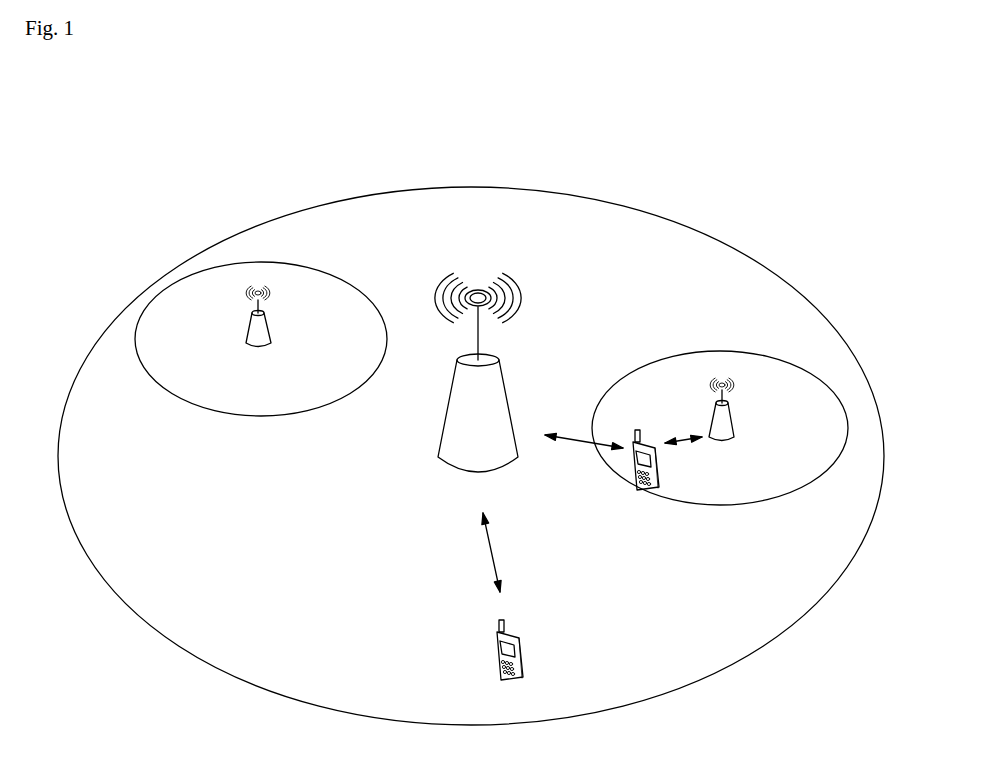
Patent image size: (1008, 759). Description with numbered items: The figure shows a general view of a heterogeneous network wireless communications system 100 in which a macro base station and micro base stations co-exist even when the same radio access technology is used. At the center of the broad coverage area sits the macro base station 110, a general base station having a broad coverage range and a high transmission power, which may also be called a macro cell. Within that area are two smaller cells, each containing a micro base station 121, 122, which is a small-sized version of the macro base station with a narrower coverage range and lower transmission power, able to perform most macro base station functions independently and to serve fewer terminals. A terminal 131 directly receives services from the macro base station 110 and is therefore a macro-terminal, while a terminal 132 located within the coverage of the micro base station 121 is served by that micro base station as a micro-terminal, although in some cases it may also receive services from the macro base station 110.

The heterogeneous network wireless communications system 100 is at (678, 142).
The macro base station 110 is at (503, 398).
The micro base station 121 is at (272, 330).
The micro base station 122 is at (730, 415).
The terminal (user equipment) 131 is at (525, 650).
The terminal (user equipment) 132 is at (645, 478).